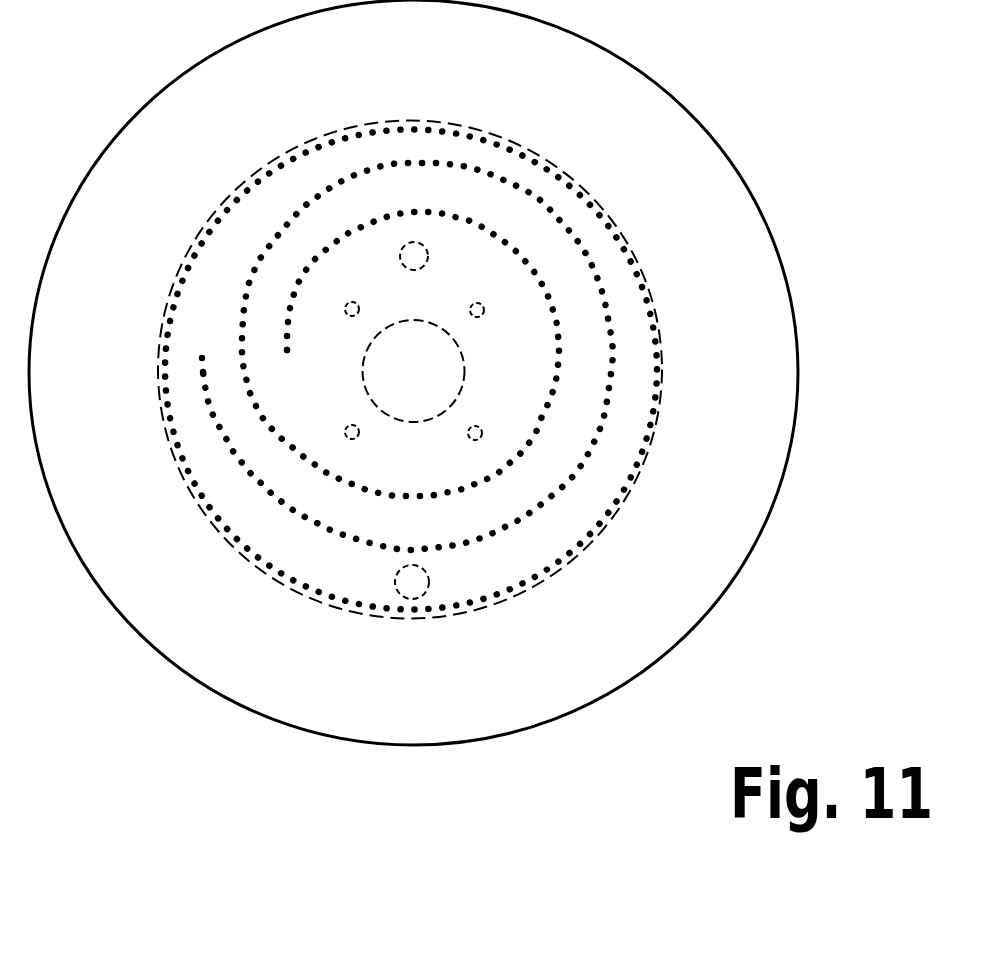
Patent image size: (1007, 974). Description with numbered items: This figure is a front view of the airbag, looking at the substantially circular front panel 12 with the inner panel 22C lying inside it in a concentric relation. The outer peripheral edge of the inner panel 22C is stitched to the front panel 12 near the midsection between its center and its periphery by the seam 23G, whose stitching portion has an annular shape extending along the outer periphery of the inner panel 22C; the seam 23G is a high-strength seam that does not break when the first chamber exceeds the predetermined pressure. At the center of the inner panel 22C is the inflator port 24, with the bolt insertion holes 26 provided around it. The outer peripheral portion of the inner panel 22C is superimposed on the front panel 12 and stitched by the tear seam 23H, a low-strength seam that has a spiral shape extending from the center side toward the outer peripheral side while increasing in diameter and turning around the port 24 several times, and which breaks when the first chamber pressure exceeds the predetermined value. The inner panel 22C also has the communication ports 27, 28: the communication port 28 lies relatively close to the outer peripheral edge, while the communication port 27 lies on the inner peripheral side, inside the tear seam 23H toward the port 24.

The front panel 12 is at (262, 715).
The inner panel 22C is at (663, 338).
The seam 23G is at (220, 212).
The tear seam 23H is at (553, 315).
The inflator port 24 is at (392, 417).
The bolt insertion holes 26 is at (322, 373).
The communication port 27 is at (430, 258).
The communication port 28 is at (430, 583).